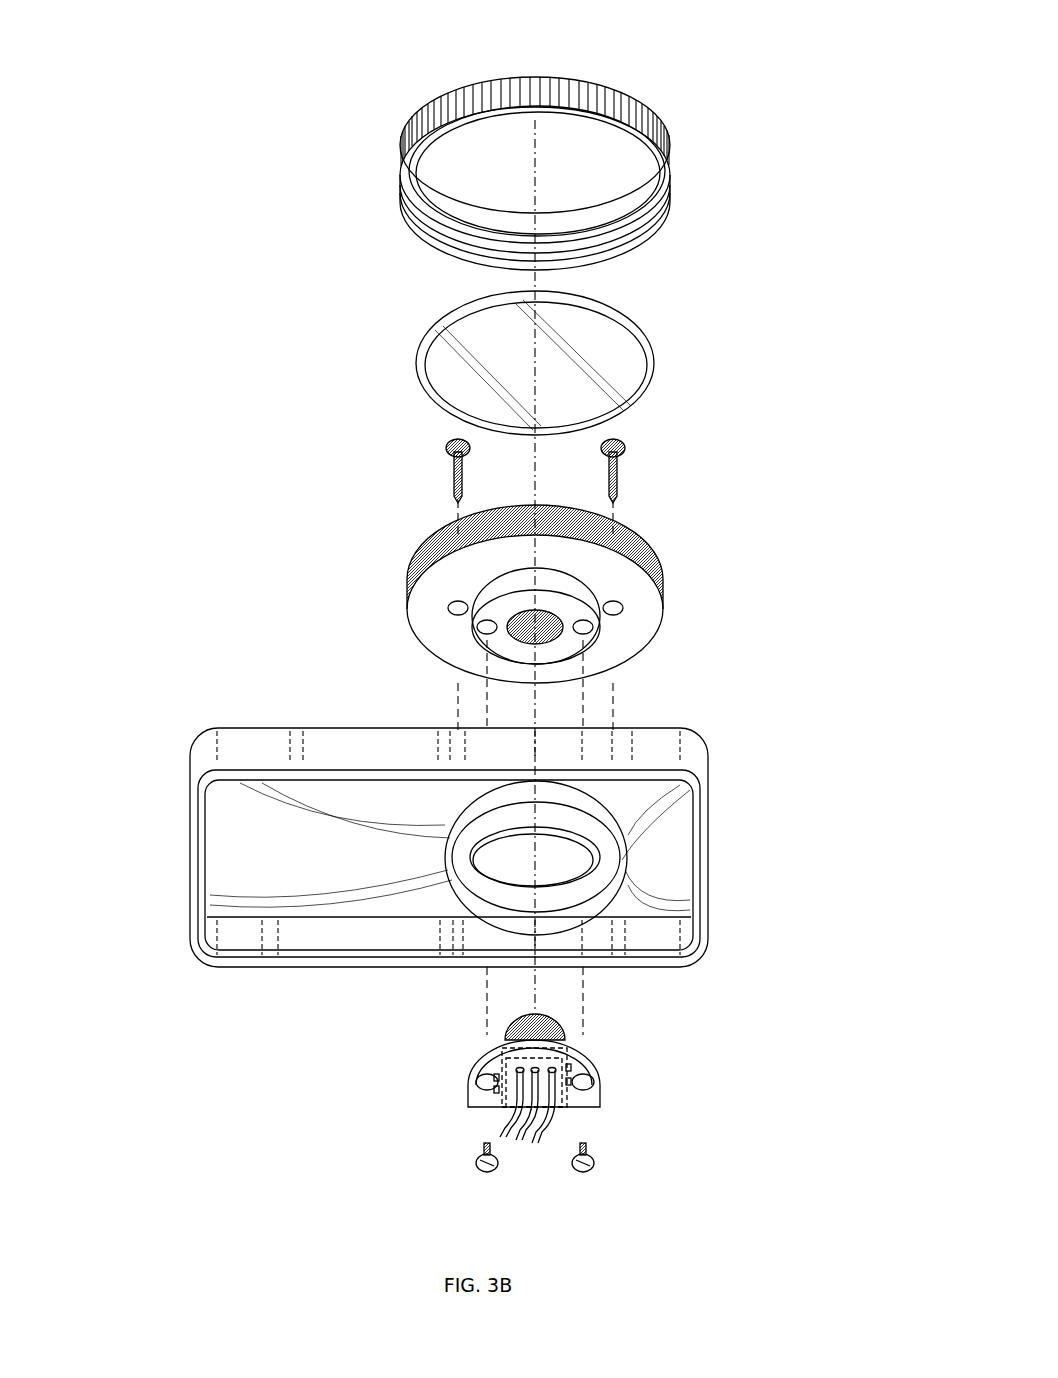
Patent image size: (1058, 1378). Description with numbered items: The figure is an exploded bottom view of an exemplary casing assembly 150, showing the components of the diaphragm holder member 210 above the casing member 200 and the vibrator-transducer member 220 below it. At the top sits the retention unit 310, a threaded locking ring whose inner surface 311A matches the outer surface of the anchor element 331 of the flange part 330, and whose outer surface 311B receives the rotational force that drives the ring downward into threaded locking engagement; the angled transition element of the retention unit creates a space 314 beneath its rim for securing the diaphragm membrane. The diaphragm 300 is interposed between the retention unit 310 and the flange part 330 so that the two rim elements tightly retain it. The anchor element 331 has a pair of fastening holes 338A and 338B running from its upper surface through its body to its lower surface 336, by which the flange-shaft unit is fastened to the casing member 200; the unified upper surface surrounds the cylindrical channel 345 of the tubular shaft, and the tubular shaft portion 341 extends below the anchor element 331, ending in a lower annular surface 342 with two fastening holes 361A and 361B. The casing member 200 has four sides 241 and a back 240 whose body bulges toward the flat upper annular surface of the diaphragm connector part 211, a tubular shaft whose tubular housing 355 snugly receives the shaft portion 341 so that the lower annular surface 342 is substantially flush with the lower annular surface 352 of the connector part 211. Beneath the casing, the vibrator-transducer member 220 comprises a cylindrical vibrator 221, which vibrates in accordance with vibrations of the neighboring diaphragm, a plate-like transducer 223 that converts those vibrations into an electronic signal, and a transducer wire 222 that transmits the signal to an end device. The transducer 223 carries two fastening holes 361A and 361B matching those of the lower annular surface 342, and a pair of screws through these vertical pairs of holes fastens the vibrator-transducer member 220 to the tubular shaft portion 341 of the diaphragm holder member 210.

The casing assembly 150 is at (838, 53).
The retention unit 310 is at (404, 143).
The inner surface of locking ring element 311A is at (460, 240).
The outer surface of locking ring element 311B is at (665, 143).
The space 314 is at (545, 145).
The diaphragm holder member 210 is at (392, 564).
The diaphragm 300 is at (630, 380).
The fastening hole 338A is at (456, 602).
The fastening hole 338B is at (615, 602).
The tubular shaft portion 341 is at (553, 585).
The anchor element 331 is at (596, 530).
The flange part 330 is at (407, 593).
The lower surface of anchor element 336 is at (430, 608).
The fastening hole 361A is at (475, 626).
The fastening hole 361B is at (593, 628).
The cylindrical channel 345 is at (540, 628).
The lower annular surface 342 is at (548, 652).
The side 241 is at (240, 753).
The casing member 200 is at (185, 838).
The diaphragm connector part 211 is at (605, 857).
The tubular housing 355 is at (528, 873).
The lower annular surface of tubular shaft 352 is at (578, 908).
The back 240 is at (295, 830).
The vibrator 221 is at (545, 1025).
The vibrator-transducer member 220 is at (453, 1078).
The transducer 223 is at (575, 1068).
The transducer wire 222 is at (532, 1145).